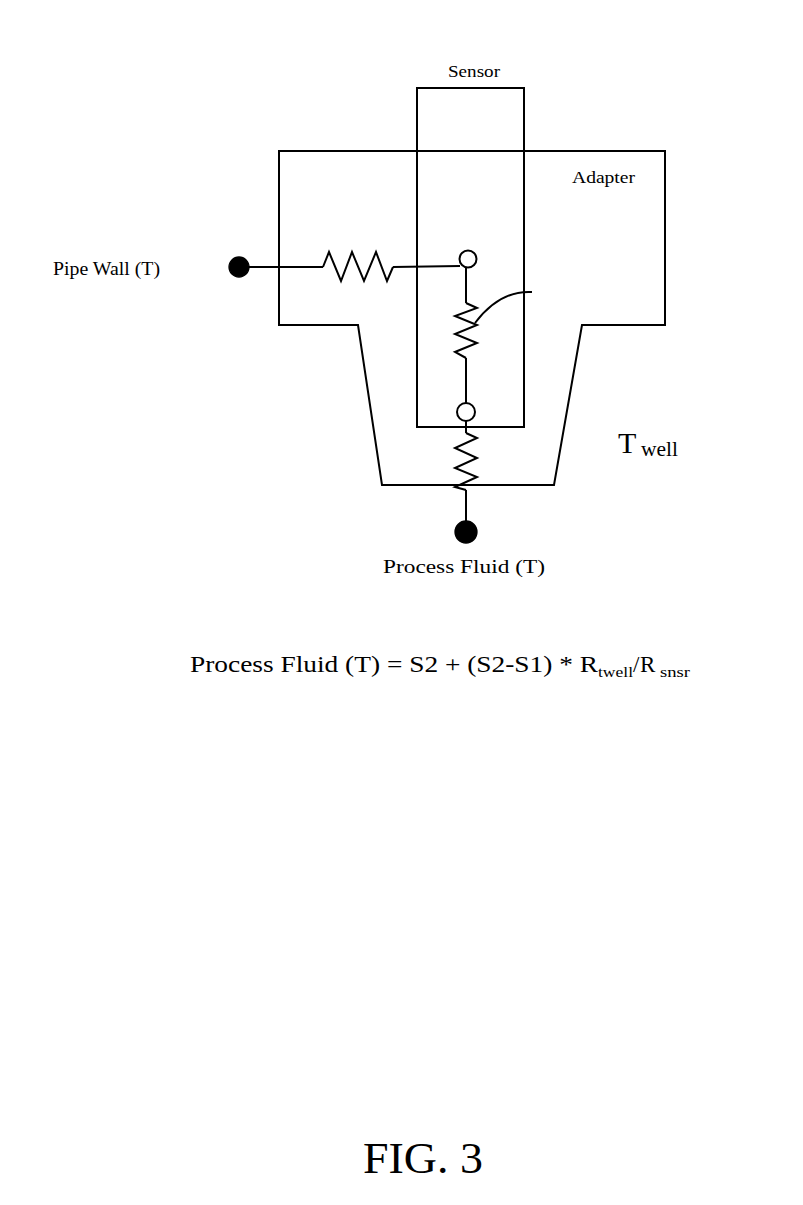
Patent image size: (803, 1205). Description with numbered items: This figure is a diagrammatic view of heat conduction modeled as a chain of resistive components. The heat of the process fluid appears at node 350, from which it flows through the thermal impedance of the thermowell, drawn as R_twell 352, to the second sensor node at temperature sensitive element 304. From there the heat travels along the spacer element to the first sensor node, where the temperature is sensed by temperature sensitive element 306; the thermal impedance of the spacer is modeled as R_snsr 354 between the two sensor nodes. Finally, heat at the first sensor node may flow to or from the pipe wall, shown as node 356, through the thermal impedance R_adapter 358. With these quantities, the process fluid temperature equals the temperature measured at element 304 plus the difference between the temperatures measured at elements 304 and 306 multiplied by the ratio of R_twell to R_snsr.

The temperature sensitive element 304 is at (456, 413).
The temperature sensitive element 306 is at (463, 251).
The node 350 is at (476, 535).
The R_twell 352 is at (477, 459).
The R_snsr 354 is at (468, 353).
The node 356 is at (239, 278).
The R_adapter 358 is at (345, 252).